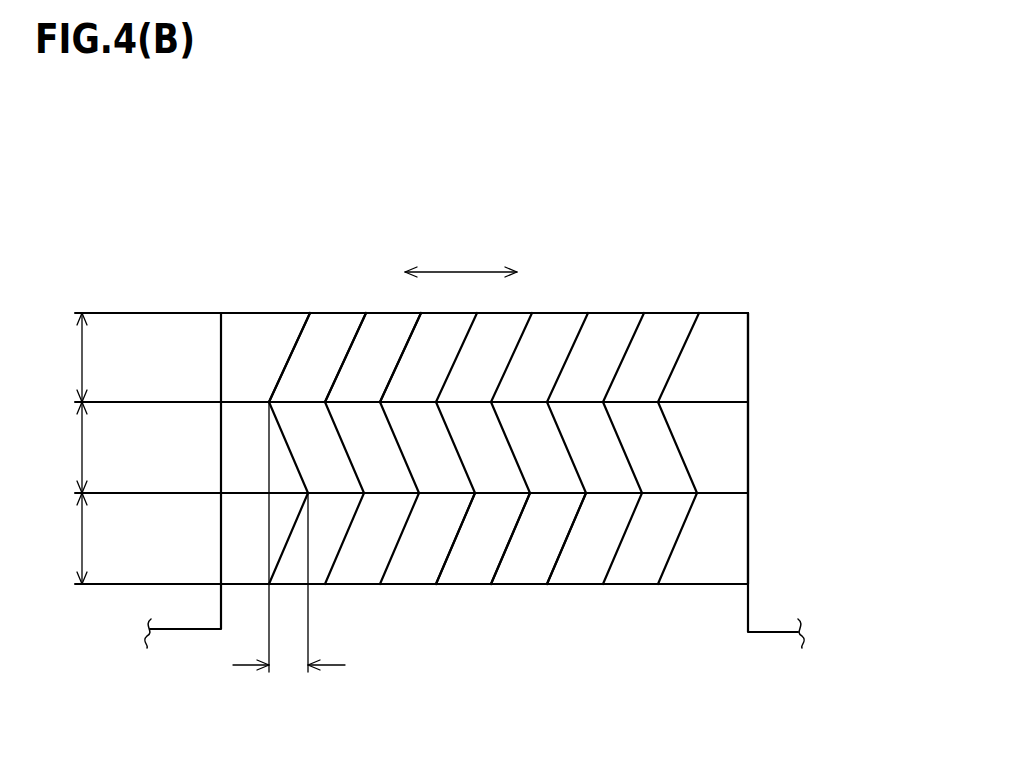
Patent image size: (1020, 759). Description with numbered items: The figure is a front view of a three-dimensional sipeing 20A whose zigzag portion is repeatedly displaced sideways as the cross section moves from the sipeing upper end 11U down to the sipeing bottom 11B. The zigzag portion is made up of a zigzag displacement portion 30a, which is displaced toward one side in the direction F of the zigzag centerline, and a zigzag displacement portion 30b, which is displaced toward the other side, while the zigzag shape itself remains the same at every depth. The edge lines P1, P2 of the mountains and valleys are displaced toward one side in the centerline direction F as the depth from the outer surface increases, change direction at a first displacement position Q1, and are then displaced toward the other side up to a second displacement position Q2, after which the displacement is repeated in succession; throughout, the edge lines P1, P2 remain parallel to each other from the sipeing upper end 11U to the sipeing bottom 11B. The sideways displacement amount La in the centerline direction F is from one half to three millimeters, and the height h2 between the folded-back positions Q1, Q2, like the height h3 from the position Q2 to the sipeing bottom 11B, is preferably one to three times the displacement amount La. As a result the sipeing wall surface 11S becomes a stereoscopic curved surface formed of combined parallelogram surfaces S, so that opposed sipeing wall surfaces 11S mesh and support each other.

The three-dimensional sipeing 20A is at (638, 250).
The sipeing upper end 11U is at (562, 313).
The sipeing bottom 11B is at (684, 584).
The zigzag displacement portion 30a is at (213, 315).
The zigzag displacement portion 30b is at (213, 404).
The edge line of mountains and valleys P1 is at (403, 355).
The edge line of mountains and valleys P2 is at (347, 355).
The direction of the zigzag centerline F is at (463, 272).
The first displacement position Q1 is at (265, 406).
The second displacement position Q2 is at (300, 498).
The height between the displacement folded back positions Q1, Q2 h2 is at (82, 447).
The height from the displacement position Q2 to the sipeing bottom h3 is at (82, 538).
The displacement amount La is at (289, 553).
The parallelogram surface S is at (527, 560).
The sipeing wall surface 11S is at (582, 562).